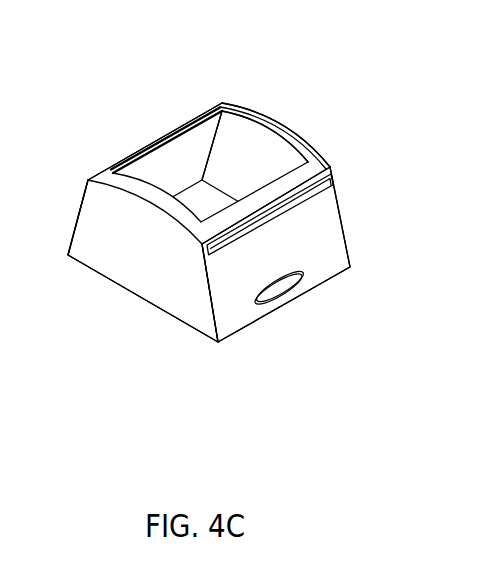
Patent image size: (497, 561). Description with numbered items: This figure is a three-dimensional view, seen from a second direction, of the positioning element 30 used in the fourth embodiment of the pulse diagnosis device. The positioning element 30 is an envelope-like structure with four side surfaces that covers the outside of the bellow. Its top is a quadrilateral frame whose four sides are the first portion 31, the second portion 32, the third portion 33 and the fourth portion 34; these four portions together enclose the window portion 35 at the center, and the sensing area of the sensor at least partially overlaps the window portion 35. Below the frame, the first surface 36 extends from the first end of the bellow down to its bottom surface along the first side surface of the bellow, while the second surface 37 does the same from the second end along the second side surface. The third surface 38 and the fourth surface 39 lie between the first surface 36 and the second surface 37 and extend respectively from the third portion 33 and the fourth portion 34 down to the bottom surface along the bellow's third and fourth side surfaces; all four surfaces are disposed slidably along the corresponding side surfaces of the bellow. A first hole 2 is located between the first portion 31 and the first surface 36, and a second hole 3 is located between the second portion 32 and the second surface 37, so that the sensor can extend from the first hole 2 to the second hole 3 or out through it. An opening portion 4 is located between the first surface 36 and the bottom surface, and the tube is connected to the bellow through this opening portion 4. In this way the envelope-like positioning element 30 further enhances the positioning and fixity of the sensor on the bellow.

The positioning element 30 is at (109, 41).
The first hole 2 is at (332, 183).
The second hole 3 is at (172, 130).
The opening portion 4 is at (305, 280).
The first portion 31 is at (235, 212).
The second portion 32 is at (128, 155).
The third portion 33 is at (83, 195).
The fourth portion 34 is at (302, 148).
The window portion 35 is at (228, 137).
The first surface 36 is at (320, 227).
The second surface 37 is at (199, 156).
The third surface 38 is at (137, 262).
The fourth surface 39 is at (272, 157).